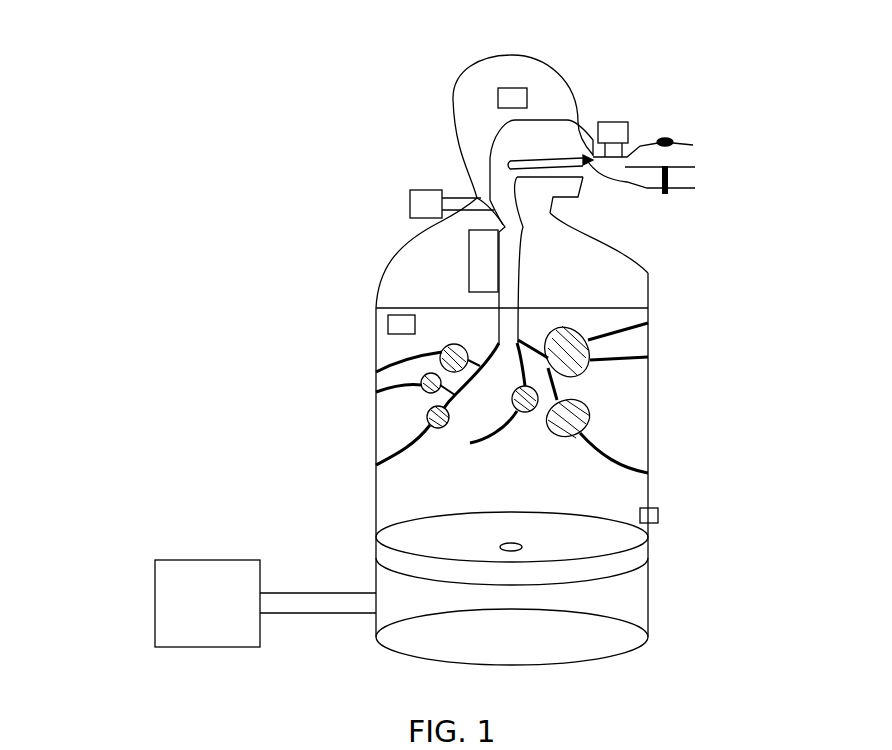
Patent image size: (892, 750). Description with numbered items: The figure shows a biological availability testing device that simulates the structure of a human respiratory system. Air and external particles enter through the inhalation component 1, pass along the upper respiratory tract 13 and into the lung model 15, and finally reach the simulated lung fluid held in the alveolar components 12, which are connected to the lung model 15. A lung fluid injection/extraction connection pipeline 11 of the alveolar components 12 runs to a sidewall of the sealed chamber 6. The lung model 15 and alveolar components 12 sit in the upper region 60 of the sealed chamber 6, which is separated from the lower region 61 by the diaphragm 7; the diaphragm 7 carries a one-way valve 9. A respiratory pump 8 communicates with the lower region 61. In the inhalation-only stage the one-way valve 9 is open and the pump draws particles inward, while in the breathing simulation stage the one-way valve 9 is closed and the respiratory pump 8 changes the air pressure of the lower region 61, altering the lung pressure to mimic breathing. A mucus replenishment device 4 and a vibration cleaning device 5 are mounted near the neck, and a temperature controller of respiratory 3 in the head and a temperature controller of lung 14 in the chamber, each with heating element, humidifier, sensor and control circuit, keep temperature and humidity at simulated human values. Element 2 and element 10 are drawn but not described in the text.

The inhalation component 1 is at (680, 152).
The inlet valve 2 is at (622, 128).
The temperature controller of respiratory 3 is at (528, 87).
The mucus replenishment device 4 is at (410, 200).
The vibration cleaning device 5 is at (467, 260).
The sealed chamber 6 is at (372, 412).
The upper region 60 is at (388, 440).
The diaphragm 7 is at (410, 533).
The respiratory pump 8 is at (190, 590).
The one-way valve 9 is at (527, 548).
The side port 10 is at (660, 512).
The lung fluid injection/extraction connection pipeline 11 is at (617, 463).
The alveolar components 12 is at (592, 340).
The upper respiratory tract 13 is at (522, 263).
The temperature controller of lung 14 is at (387, 320).
The lung model 15 is at (562, 388).
The lower region 61 is at (643, 615).